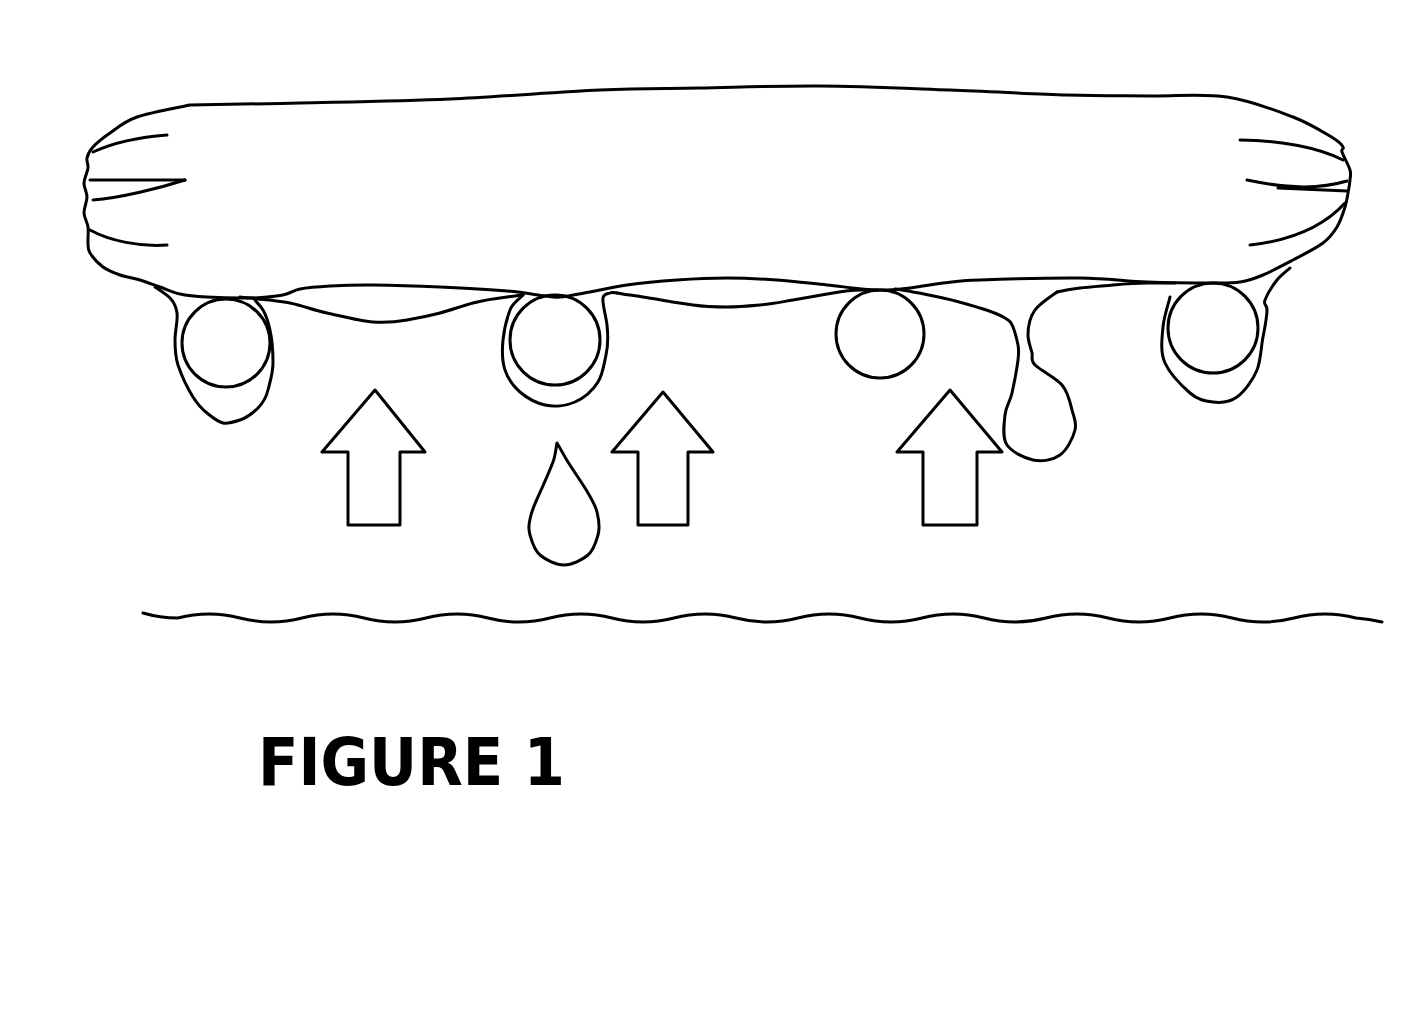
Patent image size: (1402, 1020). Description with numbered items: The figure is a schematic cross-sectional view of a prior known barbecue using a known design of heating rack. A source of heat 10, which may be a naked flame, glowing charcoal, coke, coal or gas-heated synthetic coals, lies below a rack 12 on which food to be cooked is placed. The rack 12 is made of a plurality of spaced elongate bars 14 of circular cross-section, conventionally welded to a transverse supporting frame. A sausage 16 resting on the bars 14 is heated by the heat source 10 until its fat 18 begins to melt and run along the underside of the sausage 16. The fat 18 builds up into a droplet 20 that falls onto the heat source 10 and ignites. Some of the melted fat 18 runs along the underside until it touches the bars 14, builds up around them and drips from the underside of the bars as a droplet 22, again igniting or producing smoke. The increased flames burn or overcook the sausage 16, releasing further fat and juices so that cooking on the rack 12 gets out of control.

The source of heat 10 is at (357, 518).
The rack 12 is at (1253, 342).
The bars 14 is at (198, 343).
The sausage 16 is at (690, 193).
The fat 18 is at (230, 408).
The droplet 20 is at (1037, 438).
The droplet 22 is at (570, 548).